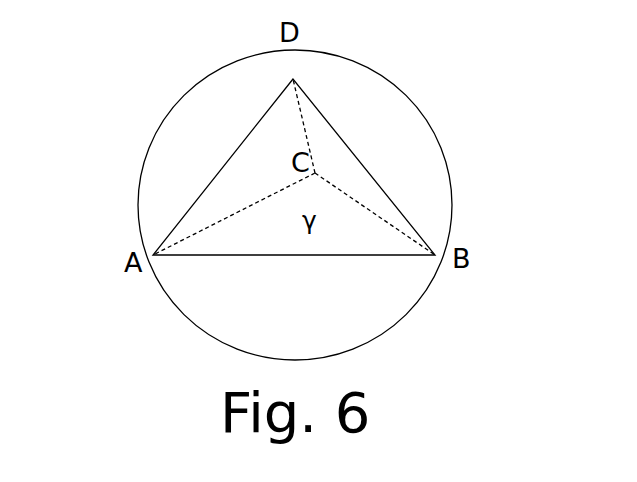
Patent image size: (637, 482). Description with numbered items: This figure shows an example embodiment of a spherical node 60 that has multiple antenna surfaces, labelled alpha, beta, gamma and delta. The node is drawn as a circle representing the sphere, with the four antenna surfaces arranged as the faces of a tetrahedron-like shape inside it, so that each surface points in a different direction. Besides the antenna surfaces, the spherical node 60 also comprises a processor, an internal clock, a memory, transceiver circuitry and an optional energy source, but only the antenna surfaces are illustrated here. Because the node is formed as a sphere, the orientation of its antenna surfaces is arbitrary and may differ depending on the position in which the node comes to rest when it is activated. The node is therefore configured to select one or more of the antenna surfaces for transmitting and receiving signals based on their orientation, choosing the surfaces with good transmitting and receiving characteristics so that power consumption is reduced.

The spherical node 60 is at (149, 148).